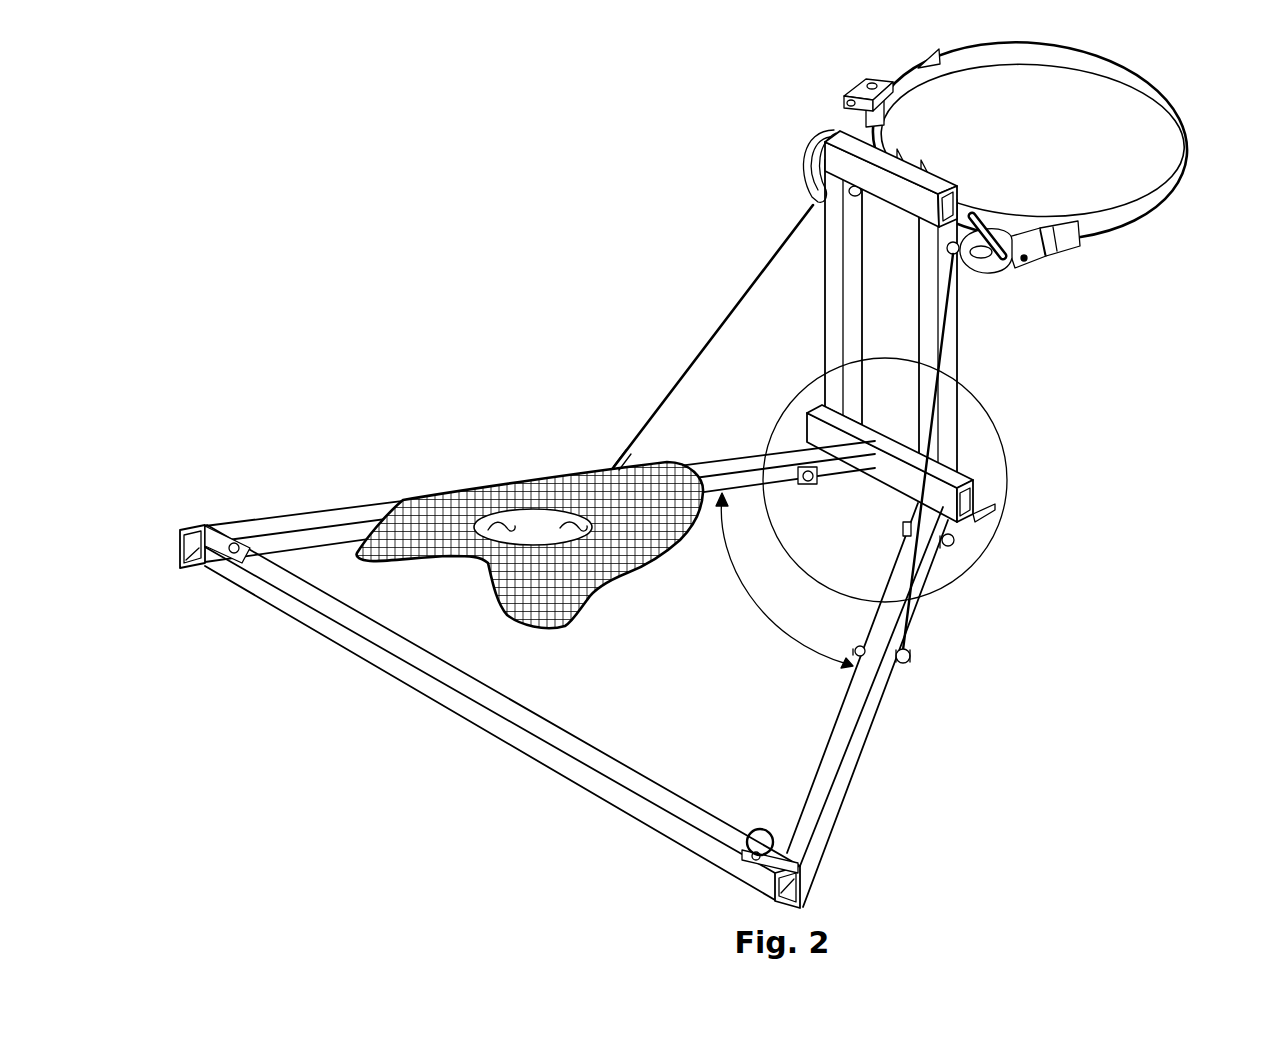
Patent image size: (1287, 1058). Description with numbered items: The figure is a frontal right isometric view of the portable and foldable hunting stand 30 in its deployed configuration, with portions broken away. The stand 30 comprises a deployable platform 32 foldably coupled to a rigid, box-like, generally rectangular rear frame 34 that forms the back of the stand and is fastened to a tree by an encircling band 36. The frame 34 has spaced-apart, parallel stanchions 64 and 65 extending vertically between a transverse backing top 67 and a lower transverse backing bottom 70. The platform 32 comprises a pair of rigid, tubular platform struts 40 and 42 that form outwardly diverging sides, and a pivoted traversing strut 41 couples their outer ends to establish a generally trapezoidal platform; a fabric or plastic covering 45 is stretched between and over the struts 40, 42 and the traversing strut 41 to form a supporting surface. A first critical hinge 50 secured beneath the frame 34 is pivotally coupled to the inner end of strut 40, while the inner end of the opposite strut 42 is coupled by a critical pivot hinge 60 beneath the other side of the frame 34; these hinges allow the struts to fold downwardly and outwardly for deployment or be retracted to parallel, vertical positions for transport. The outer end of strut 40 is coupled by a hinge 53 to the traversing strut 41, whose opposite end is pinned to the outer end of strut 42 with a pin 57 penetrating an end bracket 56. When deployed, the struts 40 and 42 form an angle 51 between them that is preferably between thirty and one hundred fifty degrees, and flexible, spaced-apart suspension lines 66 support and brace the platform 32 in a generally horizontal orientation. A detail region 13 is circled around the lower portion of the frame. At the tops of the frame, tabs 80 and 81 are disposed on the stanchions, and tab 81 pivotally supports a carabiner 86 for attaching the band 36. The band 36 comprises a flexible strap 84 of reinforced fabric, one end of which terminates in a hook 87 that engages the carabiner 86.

The detail circle 13 is at (1006, 453).
The portable and foldable hunting stand 30 is at (583, 251).
The deployable platform 32 is at (564, 644).
The rear frame 34 is at (986, 298).
The encircling band 36 is at (1058, 141).
The platform strut 40 is at (343, 518).
The traversing strut 41 is at (548, 740).
The platform strut 42 is at (843, 777).
The covering 45 is at (530, 545).
The first critical hinge 50 is at (812, 488).
The angle 51 is at (765, 603).
The hinge 53 is at (228, 546).
The end bracket 56 is at (768, 861).
The pin 57 is at (760, 829).
The critical pivot hinge 60 is at (950, 545).
The stanchion 64 is at (830, 300).
The stanchion 65 is at (958, 357).
The suspension lines 66 is at (672, 383).
The backing top 67 is at (851, 140).
The backing bottom 70 is at (882, 482).
The tab 80 is at (808, 190).
The tab 81 is at (957, 225).
The strap 84 is at (1141, 84).
The carabiner 86 is at (992, 232).
The hook 87 is at (1038, 228).